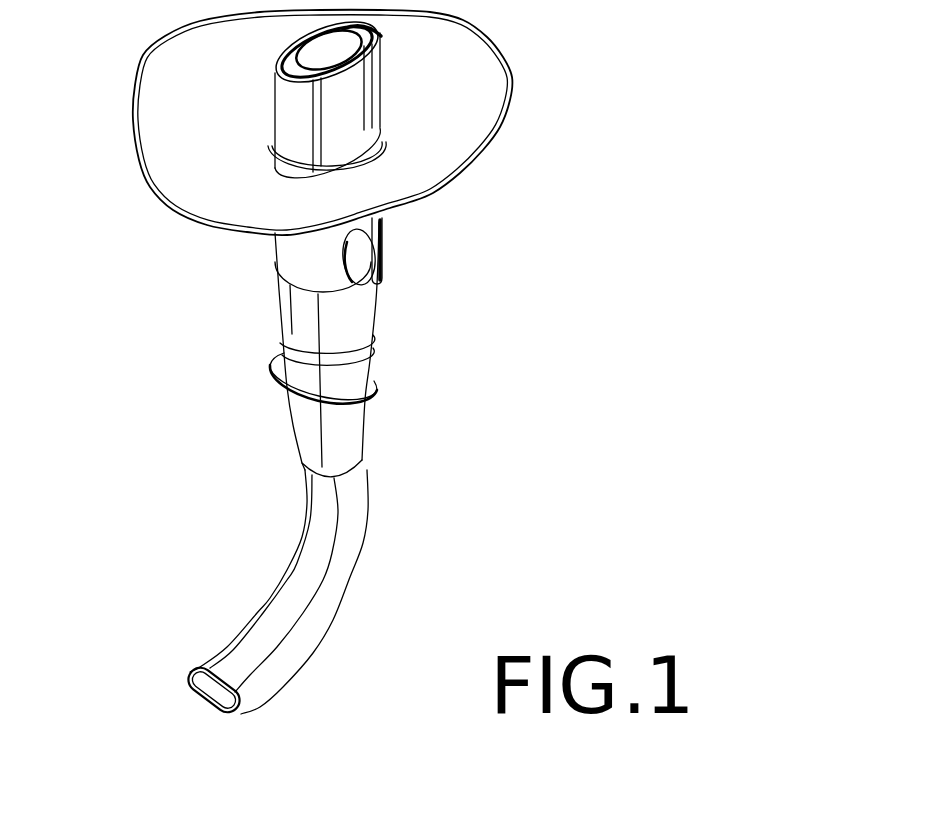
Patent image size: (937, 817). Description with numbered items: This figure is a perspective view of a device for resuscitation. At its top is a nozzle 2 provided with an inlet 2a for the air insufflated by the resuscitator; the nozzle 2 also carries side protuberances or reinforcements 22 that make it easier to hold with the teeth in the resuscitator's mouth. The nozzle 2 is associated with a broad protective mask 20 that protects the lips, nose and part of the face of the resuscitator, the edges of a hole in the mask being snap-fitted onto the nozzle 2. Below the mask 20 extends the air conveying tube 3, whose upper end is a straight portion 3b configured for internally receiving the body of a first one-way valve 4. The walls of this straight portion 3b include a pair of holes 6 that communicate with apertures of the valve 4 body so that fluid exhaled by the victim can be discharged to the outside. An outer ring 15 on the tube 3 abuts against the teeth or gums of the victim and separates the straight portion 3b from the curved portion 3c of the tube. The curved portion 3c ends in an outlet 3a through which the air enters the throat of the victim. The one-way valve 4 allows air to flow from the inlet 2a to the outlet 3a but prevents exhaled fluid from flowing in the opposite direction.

The nozzle 2 is at (349, 92).
The inlet 2a is at (297, 48).
The side protuberances or reinforcements 22 is at (302, 110).
The protective mask 20 is at (202, 193).
The holes 6 is at (372, 225).
The first one-way valve 4 is at (356, 265).
The air conveying tube 3 is at (293, 460).
The straight portion 3b is at (412, 340).
The outer ring 15 is at (373, 392).
The curved portion 3c is at (343, 570).
The outlet 3a is at (193, 670).